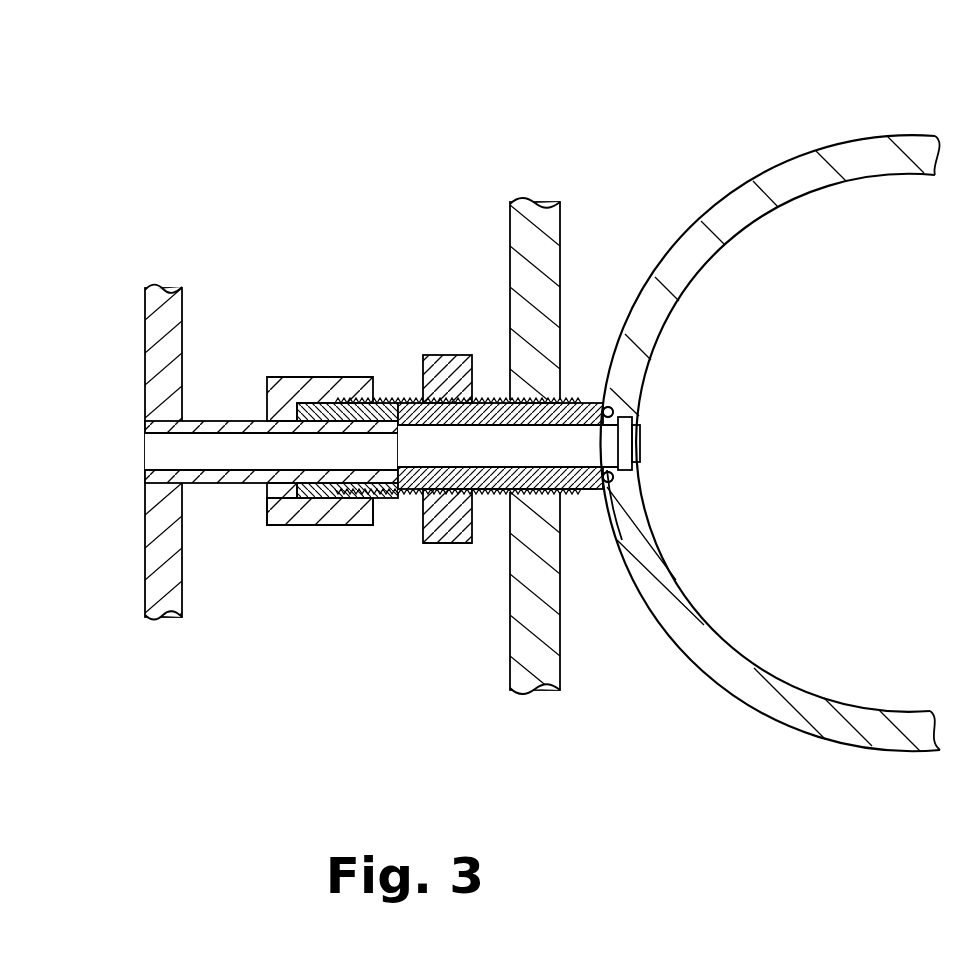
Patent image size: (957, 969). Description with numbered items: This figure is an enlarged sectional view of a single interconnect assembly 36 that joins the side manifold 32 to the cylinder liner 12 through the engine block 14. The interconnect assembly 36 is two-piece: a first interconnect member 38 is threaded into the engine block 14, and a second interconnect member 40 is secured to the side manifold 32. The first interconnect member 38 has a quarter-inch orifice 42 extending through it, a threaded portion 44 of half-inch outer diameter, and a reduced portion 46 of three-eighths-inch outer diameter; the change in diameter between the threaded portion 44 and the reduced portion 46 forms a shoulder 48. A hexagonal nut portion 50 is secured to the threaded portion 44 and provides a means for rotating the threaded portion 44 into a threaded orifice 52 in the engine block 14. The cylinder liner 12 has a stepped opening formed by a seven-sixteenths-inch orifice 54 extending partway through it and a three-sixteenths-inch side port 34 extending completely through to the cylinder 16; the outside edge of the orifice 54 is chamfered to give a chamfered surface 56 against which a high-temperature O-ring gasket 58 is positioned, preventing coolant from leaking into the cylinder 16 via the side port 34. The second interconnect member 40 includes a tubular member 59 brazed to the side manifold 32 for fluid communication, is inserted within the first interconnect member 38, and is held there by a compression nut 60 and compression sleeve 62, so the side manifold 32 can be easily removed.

The cylinder liner 12 is at (833, 140).
The engine block 14 is at (562, 222).
The cylinder 16 is at (881, 446).
The side manifold 32 is at (145, 332).
The side port 34 is at (645, 447).
The interconnect assembly 36 is at (426, 385).
The first interconnect member 38 is at (426, 580).
The second interconnect member 40 is at (251, 535).
The orifice 42 is at (485, 445).
The threaded portion 44 is at (490, 494).
The reduced portion 46 is at (613, 510).
The shoulder 48 is at (603, 407).
The hexagonal nut portion 50 is at (437, 355).
The threaded orifice 52 is at (571, 388).
The 7/16-inch orifice 54 is at (614, 481).
The chamfered surface 56 is at (614, 409).
The O-ring gasket 58 is at (607, 483).
The tubular member 59 is at (199, 421).
The compression nut 60 is at (293, 377).
The compression sleeve 62 is at (318, 403).